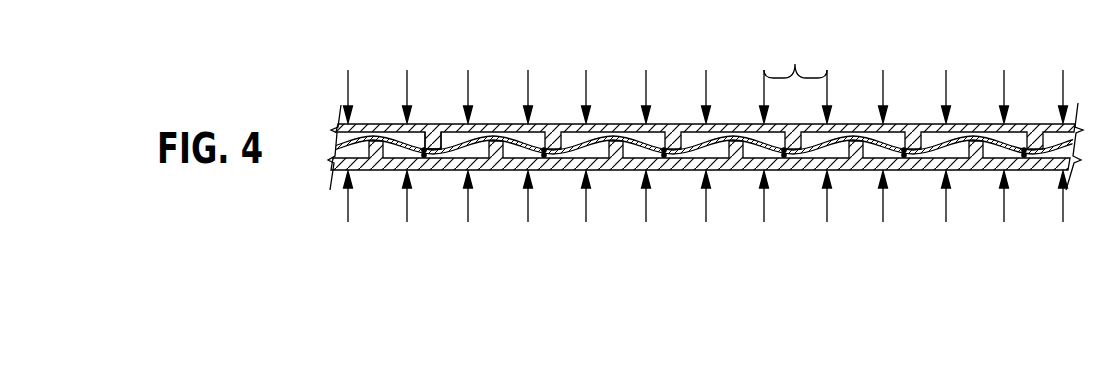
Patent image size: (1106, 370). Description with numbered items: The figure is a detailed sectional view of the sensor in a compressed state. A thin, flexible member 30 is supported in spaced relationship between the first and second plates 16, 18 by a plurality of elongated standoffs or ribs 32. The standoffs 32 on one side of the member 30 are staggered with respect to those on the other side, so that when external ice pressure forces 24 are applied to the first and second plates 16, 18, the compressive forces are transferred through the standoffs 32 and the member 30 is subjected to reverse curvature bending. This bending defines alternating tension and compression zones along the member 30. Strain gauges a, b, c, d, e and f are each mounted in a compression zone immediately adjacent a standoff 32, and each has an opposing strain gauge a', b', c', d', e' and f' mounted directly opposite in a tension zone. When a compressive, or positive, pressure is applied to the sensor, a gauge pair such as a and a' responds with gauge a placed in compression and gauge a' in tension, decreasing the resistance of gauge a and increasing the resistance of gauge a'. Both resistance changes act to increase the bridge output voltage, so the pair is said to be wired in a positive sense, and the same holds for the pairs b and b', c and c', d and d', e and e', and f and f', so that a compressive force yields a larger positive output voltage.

The first plate 16 is at (860, 170).
The second plate 18 is at (608, 123).
The ice pressure forces 24 is at (795, 56).
The member 30 is at (515, 151).
The standoffs 32 is at (453, 140).
The strain gauge a is at (435, 119).
The opposing strain gauge a' is at (433, 176).
The strain gauge b is at (556, 119).
The opposing strain gauge b' is at (554, 176).
The strain gauge c is at (672, 122).
The opposing strain gauge c' is at (674, 177).
The strain gauge d is at (794, 122).
The opposing strain gauge d' is at (794, 176).
The strain gauge e is at (913, 122).
The opposing strain gauge e' is at (914, 177).
The strain gauge f is at (1032, 118).
The opposing strain gauge f' is at (1034, 177).